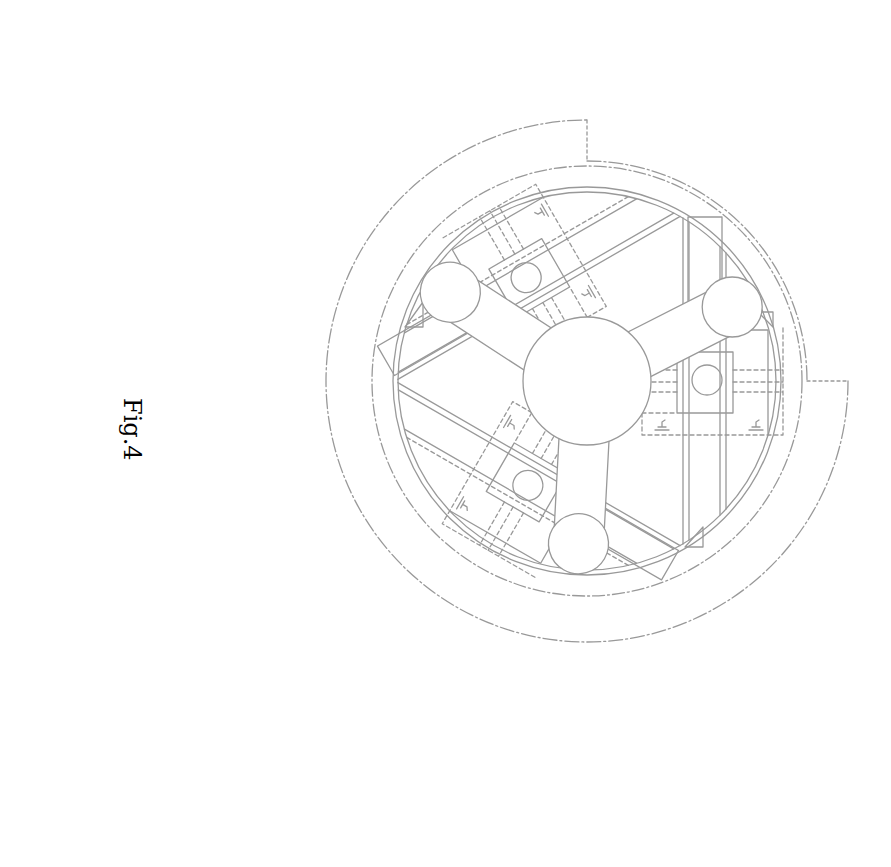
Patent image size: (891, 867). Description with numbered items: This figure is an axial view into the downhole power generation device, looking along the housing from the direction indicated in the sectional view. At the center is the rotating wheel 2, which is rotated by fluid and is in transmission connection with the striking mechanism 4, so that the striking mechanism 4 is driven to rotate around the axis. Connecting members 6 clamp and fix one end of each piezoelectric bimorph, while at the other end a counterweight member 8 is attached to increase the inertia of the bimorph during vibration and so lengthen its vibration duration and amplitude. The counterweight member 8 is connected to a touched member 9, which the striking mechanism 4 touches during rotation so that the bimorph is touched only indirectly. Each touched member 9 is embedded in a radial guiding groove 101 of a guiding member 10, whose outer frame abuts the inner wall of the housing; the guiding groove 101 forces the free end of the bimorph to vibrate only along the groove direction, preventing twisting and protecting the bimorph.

The rotating wheel 2 is at (430, 134).
The striking mechanism 4 is at (704, 294).
The connecting member 6 is at (438, 458).
The counterweight member 8 is at (764, 429).
The touched member 9 is at (503, 514).
The guiding member 10 is at (766, 533).
The guiding groove 101 is at (691, 526).